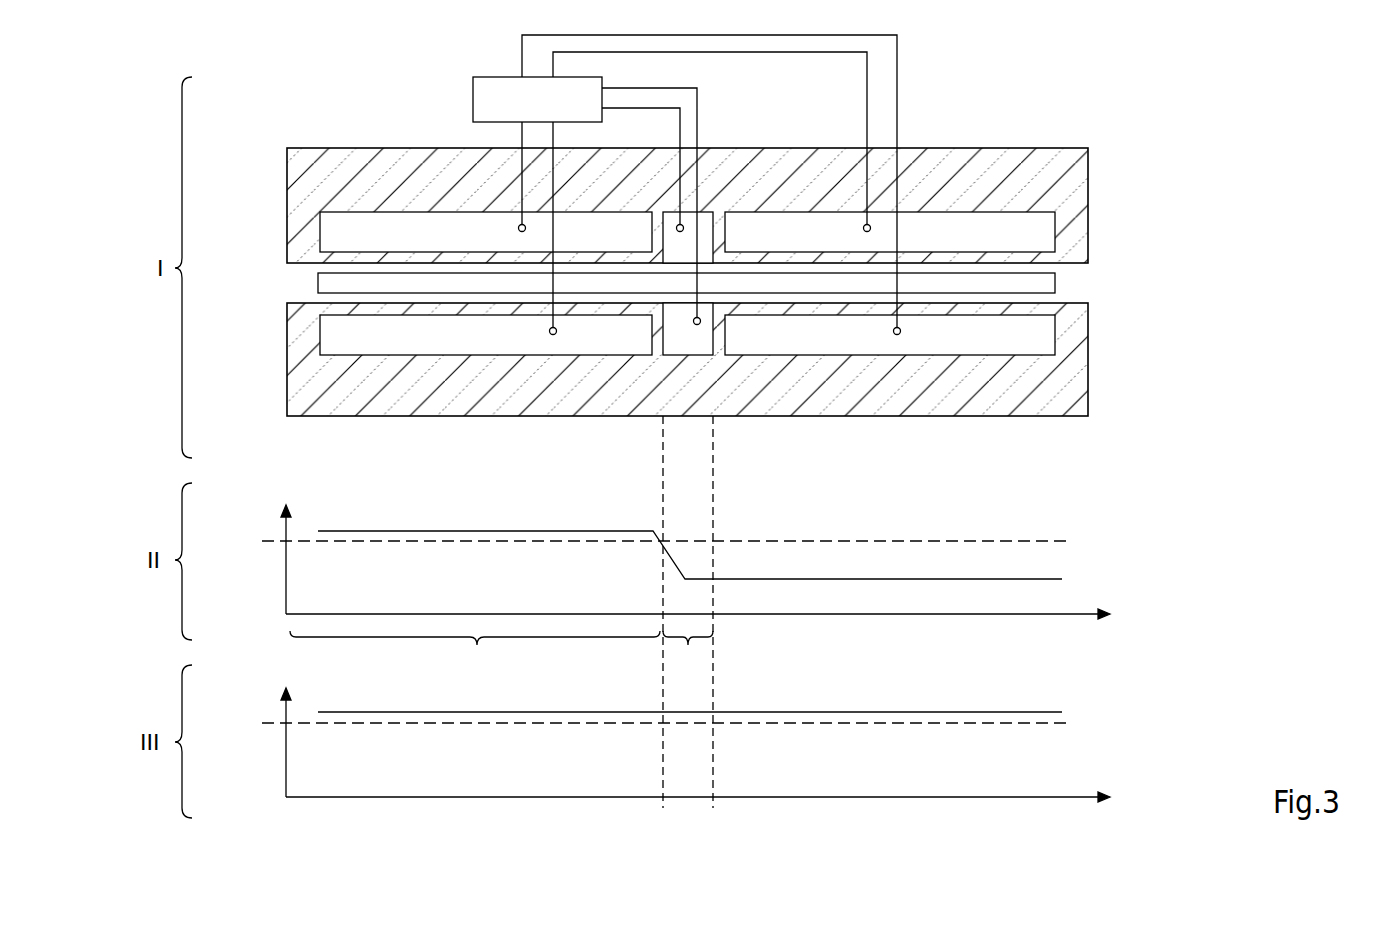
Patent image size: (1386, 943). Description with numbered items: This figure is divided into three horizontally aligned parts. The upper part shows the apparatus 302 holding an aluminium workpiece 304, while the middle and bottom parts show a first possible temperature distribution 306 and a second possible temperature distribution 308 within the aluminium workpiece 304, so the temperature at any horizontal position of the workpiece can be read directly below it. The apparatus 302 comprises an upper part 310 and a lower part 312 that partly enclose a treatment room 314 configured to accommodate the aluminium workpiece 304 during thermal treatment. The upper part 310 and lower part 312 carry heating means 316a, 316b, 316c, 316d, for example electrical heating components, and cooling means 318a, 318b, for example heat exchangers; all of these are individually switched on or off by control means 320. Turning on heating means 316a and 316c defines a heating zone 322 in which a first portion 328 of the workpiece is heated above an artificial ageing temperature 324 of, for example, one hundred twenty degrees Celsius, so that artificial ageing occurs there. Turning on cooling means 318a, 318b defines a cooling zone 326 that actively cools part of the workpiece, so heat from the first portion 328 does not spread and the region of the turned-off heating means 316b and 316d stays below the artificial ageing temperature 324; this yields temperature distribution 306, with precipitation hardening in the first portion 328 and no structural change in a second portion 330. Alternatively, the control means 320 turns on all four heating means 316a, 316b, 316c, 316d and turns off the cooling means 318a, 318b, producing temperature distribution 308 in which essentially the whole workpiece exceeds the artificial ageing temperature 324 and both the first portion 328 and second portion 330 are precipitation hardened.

The apparatus 302 is at (703, 421).
The aluminium workpiece 304 is at (337, 283).
The first possible temperature distribution 306 is at (741, 582).
The second possible temperature distribution 308 is at (1117, 705).
The upper part 310 is at (340, 163).
The lower part 312 is at (342, 402).
The treatment room 314 is at (283, 275).
The heating means 316a is at (422, 223).
The heating means 316b is at (965, 222).
The heating means 316c is at (422, 345).
The heating means 316d is at (965, 343).
The cooling means 318a is at (707, 220).
The cooling means 318b is at (690, 342).
The control means 320 is at (557, 109).
The heating zone 322 is at (475, 653).
The artificial ageing temperature 324 is at (277, 545).
The cooling zone 326 is at (688, 653).
The first portion 328 is at (502, 283).
The second portion 330 is at (820, 282).